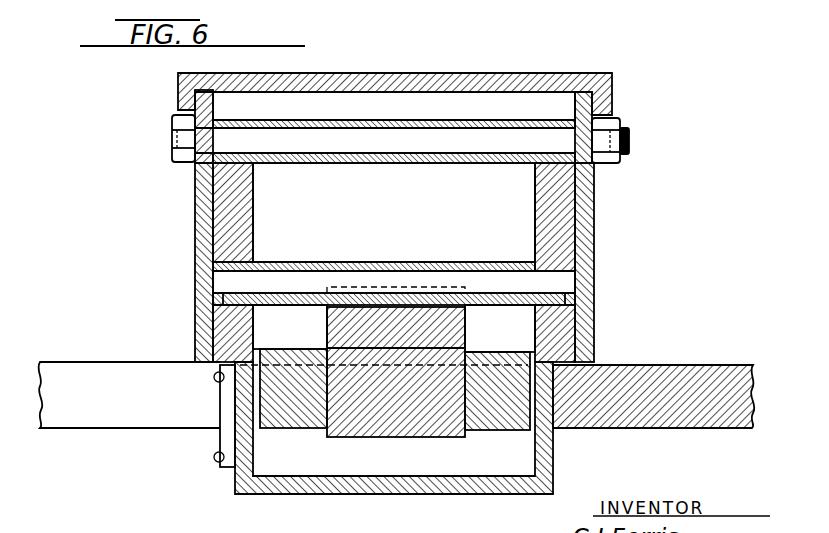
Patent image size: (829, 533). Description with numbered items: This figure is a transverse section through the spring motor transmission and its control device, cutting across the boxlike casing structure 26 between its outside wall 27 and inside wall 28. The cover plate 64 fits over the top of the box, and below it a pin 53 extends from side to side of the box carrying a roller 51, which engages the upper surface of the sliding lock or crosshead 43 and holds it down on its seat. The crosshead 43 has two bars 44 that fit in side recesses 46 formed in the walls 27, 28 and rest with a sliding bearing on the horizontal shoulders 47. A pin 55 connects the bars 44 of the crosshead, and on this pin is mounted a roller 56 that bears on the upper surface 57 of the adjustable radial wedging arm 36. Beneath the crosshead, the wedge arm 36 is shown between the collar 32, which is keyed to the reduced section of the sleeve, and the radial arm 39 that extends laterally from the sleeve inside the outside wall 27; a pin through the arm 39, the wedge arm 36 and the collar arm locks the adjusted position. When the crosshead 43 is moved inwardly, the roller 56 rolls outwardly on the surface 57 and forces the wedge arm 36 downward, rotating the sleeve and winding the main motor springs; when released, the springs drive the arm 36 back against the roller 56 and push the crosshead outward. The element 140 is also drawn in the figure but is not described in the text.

The cover plate 64 is at (461, 79).
The roller 51 is at (368, 164).
The pin 53 is at (410, 146).
The boxlike casing structure 26 is at (191, 211).
The side recess 46 is at (577, 190).
The bar 44 is at (227, 192).
The sliding lock or crosshead 43 is at (531, 216).
The roller 56 is at (322, 266).
The pin 55 is at (392, 274).
The upper surface 57 is at (433, 302).
The horizontal shoulder 47 is at (215, 303).
The outside wall 27 is at (224, 322).
The inside wall 28 is at (570, 327).
The side plate 140 is at (223, 443).
The radial arm 39 is at (308, 420).
The adjustable radial wedging arm 36 is at (393, 425).
The collar 32 is at (495, 418).